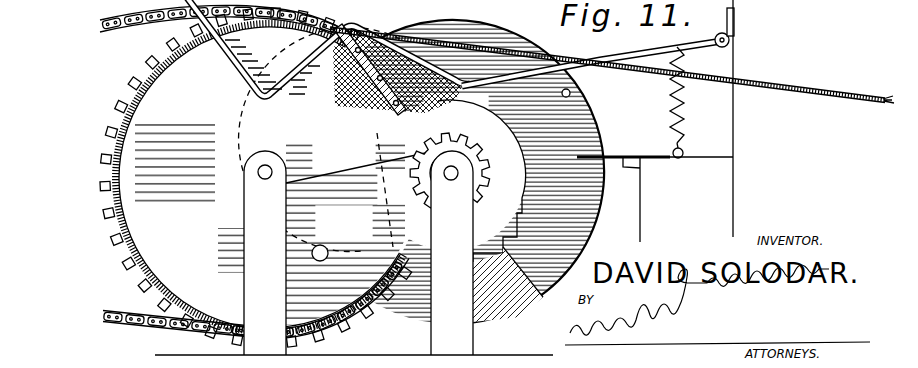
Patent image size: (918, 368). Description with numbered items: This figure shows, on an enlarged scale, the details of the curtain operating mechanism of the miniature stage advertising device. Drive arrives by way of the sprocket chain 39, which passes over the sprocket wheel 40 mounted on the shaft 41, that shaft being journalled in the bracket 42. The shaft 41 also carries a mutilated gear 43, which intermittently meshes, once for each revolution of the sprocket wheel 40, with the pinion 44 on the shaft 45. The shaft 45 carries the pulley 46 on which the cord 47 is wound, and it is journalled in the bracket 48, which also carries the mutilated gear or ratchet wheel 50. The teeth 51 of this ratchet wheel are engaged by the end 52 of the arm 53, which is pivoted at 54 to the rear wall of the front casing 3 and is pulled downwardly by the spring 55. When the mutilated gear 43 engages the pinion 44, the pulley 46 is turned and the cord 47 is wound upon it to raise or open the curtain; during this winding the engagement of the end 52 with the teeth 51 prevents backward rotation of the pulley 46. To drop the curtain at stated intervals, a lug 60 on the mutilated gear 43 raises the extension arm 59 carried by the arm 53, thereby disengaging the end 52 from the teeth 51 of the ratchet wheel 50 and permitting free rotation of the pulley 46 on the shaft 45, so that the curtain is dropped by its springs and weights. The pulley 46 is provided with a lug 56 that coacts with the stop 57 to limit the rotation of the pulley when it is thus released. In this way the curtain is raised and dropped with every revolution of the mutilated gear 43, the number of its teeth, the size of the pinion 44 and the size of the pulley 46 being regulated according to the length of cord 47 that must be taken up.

The front casing 3 is at (734, 57).
The sprocket chain 39 is at (165, 27).
The sprocket wheel 40 is at (131, 263).
The shaft 41 is at (258, 176).
The bracket 42 is at (248, 218).
The mutilated gear 43 is at (256, 178).
The pinion 44 is at (372, 171).
The shaft 45 is at (442, 177).
The pulley 46 is at (580, 222).
The cord 47 is at (805, 70).
The bracket 48 is at (447, 317).
The mutilated gear 50 is at (406, 113).
The teeth 51 is at (548, 298).
The end 52 is at (400, 110).
The arm 53 is at (587, 60).
The pivot 54 is at (735, 40).
The spring 55 is at (687, 108).
The lug 56 is at (570, 95).
The stop 57 is at (640, 170).
The extension arm 59 is at (229, 63).
The lug 60 is at (328, 268).